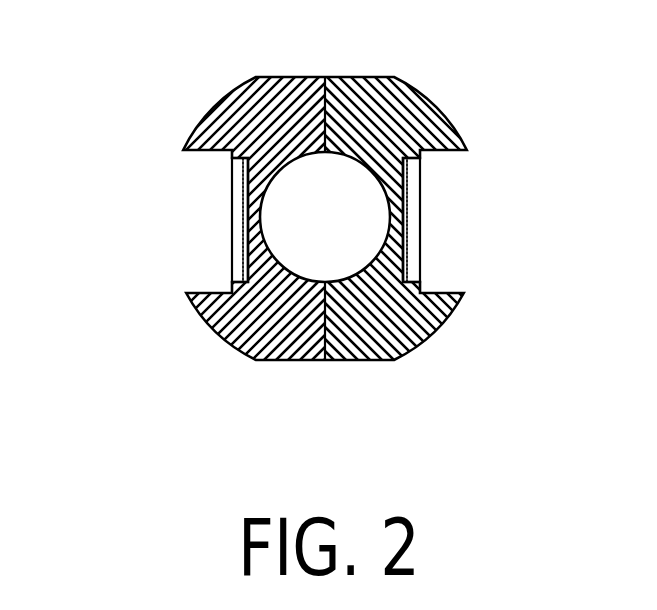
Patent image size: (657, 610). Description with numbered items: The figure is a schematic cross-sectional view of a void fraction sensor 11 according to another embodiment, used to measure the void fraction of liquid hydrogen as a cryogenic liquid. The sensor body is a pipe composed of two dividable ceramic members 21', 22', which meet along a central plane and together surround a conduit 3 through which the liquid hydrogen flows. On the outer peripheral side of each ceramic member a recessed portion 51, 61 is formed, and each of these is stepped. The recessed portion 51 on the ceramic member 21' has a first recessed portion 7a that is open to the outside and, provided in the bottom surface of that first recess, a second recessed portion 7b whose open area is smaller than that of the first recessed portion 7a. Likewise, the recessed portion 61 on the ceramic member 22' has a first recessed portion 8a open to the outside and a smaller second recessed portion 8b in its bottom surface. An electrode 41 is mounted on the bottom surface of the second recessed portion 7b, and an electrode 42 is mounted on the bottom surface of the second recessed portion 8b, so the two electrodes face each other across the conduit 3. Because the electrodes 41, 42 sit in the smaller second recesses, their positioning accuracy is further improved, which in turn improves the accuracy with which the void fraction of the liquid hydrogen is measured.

The void fraction sensor 11 is at (186, 88).
The conduit 3 is at (360, 173).
The ceramic member 21' is at (245, 253).
The ceramic member 22' is at (404, 253).
The electrode 41 is at (240, 278).
The electrode 42 is at (415, 279).
The first recessed portion 7a is at (232, 158).
The second recessed portion 7b is at (240, 231).
The first recessed portion 8a is at (420, 157).
The second recessed portion 8b is at (420, 235).
The recessed portion 51 is at (72, 155).
The recessed portion 61 is at (583, 163).